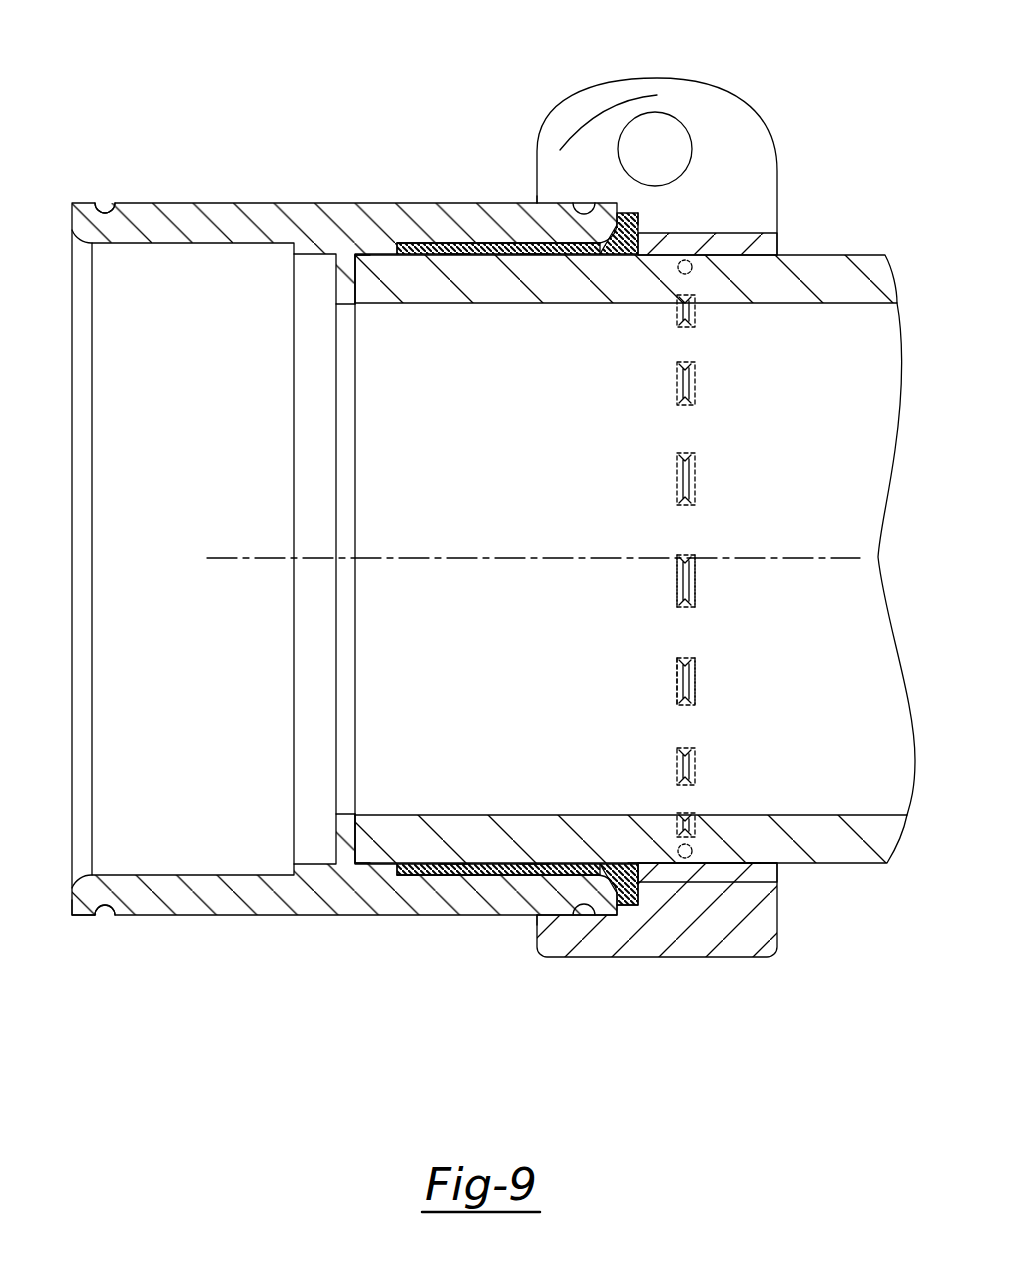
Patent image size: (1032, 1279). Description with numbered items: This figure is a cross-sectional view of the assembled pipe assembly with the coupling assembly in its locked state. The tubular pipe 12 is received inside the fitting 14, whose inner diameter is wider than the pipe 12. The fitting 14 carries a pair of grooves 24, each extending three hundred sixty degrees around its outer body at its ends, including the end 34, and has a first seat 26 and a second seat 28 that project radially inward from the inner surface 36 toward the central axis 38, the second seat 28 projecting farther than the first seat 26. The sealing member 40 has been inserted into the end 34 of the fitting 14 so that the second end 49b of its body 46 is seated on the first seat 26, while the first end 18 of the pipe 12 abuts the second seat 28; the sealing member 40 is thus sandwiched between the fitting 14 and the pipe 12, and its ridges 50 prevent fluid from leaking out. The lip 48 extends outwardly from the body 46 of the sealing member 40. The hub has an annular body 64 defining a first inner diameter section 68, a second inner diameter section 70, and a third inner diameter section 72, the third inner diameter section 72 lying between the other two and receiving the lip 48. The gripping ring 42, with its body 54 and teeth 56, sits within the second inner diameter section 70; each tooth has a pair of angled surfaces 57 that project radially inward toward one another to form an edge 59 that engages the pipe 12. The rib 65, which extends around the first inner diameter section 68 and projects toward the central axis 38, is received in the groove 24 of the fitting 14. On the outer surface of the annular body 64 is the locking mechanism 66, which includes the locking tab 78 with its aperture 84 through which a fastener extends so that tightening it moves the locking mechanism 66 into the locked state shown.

The pipe 12 is at (872, 250).
The fitting 14 is at (233, 196).
The first end 18 is at (377, 273).
The groove 24 is at (105, 210).
The first seat 26 is at (455, 256).
The second seat 28 is at (363, 258).
The end 34 is at (105, 945).
The inner surface 36 is at (537, 255).
The central axis 38 is at (585, 558).
The sealing member 40 is at (508, 240).
The gripping ring 42 is at (748, 870).
The body 46 is at (455, 243).
The lip 48 is at (646, 215).
The second end 49b is at (415, 244).
The ridges 50 is at (450, 880).
The body 54 is at (700, 258).
The teeth 56 is at (697, 404).
The angled surfaces 57 is at (677, 580).
The edge 59 is at (697, 580).
The annular body 64 is at (780, 960).
The rib 65 is at (584, 212).
The locking mechanism 66 is at (740, 88).
The first inner diameter section 68 is at (570, 243).
The second inner diameter section 70 is at (712, 238).
The third inner diameter section 72 is at (633, 227).
The locking tab 78 is at (723, 123).
The aperture 84 is at (667, 137).